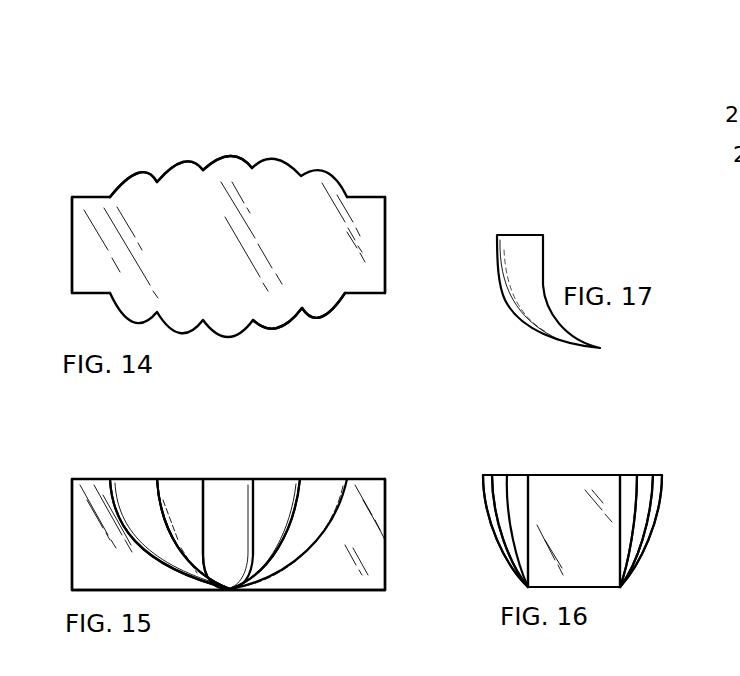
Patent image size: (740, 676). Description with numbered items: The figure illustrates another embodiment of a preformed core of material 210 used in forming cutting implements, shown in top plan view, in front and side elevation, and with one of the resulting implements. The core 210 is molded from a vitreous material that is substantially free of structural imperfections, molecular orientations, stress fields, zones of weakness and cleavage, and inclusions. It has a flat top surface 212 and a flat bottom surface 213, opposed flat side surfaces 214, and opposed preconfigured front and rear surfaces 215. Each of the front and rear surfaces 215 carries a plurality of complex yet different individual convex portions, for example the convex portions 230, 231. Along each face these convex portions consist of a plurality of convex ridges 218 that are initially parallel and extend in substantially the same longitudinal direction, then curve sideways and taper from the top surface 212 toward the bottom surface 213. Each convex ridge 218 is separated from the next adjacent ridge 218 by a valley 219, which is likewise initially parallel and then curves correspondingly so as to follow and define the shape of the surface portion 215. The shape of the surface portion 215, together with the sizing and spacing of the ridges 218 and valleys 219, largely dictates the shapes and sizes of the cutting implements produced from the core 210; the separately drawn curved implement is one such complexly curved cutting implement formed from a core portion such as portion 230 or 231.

In FIG. 14, the preformed core of material 210 is at (328, 103).
In FIG. 15, the preformed core of material 210 is at (242, 427).
In FIG. 16, the preformed core of material 210 is at (570, 447).
In FIG. 14, the top surface 212 is at (213, 265).
In FIG. 15, the top surface 212 is at (310, 492).
In FIG. 16, the top surface 212 is at (585, 475).
In FIG. 15, the bottom surface 213 is at (328, 590).
In FIG. 16, the bottom surface 213 is at (598, 587).
In FIG. 14, the side surfaces 214 is at (72, 268).
In FIG. 15, the side surfaces 214 is at (72, 538).
In FIG. 16, the side surfaces 214 is at (593, 536).
In FIG. 14, the front and rear surfaces 215 is at (118, 165).
In FIG. 17, the front and rear surfaces 215 is at (548, 291).
In FIG. 16, the front and rear surfaces 215 is at (660, 549).
In FIG. 14, the convex ridges 218 is at (180, 161).
In FIG. 15, the convex ridges 218 is at (128, 500).
In FIG. 16, the convex ridges 218 is at (643, 502).
In FIG. 14, the valley 219 is at (203, 169).
In FIG. 15, the valley 219 is at (202, 495).
In FIG. 16, the valley 219 is at (490, 487).
In FIG. 15, the convex portion 230 is at (163, 548).
In FIG. 15, the convex portion 231 is at (197, 545).